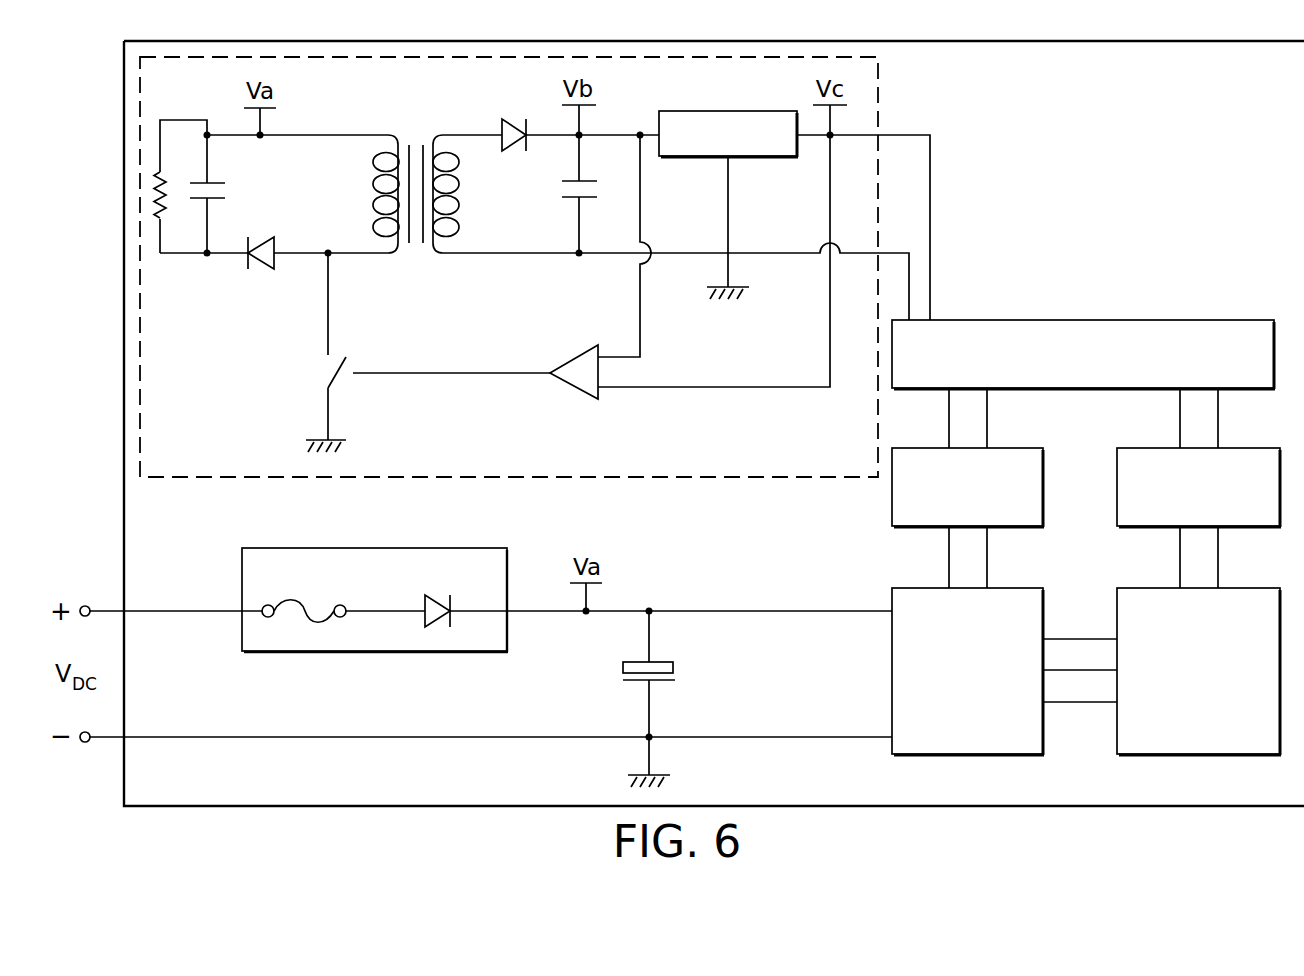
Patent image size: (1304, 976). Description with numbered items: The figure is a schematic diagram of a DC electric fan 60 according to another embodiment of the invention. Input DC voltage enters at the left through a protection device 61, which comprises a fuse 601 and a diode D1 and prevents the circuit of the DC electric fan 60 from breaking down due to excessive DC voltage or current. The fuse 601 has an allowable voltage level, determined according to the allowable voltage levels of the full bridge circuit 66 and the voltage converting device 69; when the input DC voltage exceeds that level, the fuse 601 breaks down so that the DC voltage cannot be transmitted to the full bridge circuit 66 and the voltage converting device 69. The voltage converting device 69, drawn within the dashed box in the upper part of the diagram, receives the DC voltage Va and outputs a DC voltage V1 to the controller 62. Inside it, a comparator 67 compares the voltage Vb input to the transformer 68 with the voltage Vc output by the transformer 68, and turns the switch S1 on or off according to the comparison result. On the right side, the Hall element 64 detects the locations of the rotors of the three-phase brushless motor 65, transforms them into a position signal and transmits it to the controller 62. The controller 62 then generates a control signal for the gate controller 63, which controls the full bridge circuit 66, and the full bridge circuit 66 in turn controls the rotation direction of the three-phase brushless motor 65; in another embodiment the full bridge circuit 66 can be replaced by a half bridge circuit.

The DC electric fan 60 is at (123, 56).
The protection device 61 is at (375, 581).
The fuse 601 is at (313, 597).
The diode D1 is at (437, 597).
The controller 62 is at (1084, 320).
The gate controller 63 is at (1012, 448).
The Hall element 64 is at (1245, 448).
The three-phase brushless motor 65 is at (1245, 588).
The full bridge circuit 66 is at (1012, 588).
The comparator 67 is at (577, 355).
The transformer 68 is at (718, 111).
The voltage converting device 69 is at (879, 57).
The switch S1 is at (320, 372).
The DC voltage V1 is at (932, 172).